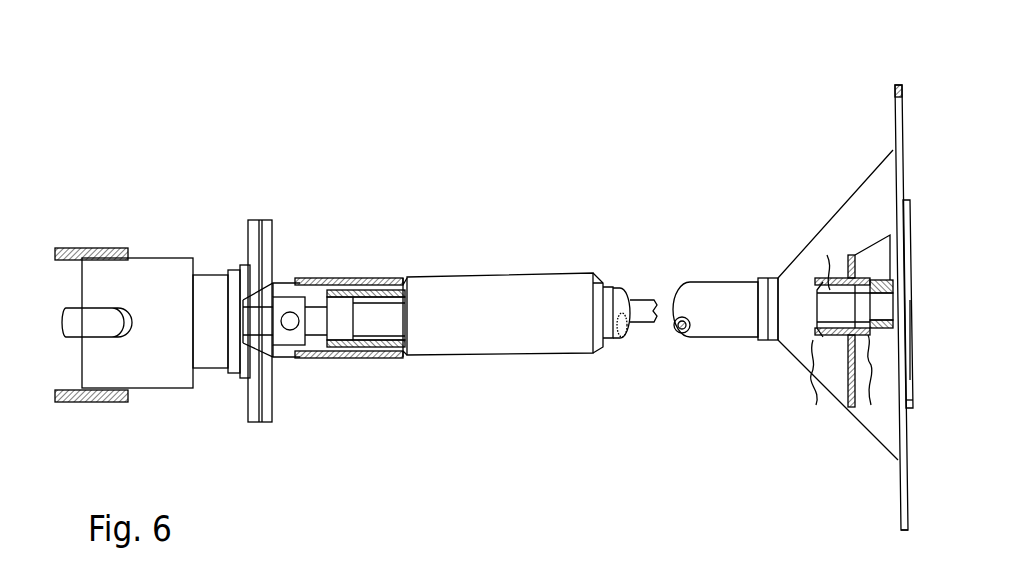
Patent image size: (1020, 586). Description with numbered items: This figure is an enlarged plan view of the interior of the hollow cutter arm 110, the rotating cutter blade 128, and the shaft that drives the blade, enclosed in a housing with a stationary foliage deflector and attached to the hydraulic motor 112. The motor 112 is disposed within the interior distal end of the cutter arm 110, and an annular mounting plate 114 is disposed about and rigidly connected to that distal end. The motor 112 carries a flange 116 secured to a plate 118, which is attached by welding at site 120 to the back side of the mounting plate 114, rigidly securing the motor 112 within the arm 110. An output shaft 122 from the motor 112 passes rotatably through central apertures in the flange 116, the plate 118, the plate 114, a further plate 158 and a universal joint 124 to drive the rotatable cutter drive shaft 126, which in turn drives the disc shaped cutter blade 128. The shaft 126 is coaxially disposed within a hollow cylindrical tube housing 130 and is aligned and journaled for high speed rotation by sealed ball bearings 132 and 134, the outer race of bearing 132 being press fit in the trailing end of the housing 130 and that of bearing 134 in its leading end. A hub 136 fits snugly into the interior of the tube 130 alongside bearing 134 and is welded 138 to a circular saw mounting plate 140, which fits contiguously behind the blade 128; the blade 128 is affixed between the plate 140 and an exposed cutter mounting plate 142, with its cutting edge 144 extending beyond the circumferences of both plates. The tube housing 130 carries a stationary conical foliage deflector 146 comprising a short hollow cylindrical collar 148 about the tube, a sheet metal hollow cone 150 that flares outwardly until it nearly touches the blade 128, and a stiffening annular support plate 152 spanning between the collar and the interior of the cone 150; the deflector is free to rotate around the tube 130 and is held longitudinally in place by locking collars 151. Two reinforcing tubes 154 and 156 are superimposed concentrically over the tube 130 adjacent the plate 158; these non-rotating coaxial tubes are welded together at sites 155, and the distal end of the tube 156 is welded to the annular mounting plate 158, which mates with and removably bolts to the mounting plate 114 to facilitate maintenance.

The cutter arm 110 is at (112, 402).
The hydraulic motor 112 is at (175, 258).
The annular mounting plate 114 is at (255, 220).
The flange 116 is at (222, 368).
The plate 118 is at (243, 374).
The welding site 120 is at (250, 378).
The output shaft 122 is at (280, 362).
The universal joint 124 is at (300, 305).
The cutter drive shaft 126 is at (322, 280).
The cutter blade 128 is at (898, 85).
The tube housing 130 is at (412, 278).
The ball bearing 132 is at (345, 300).
The ball bearing 134 is at (882, 300).
The hub 136 is at (860, 425).
The weld 138 is at (912, 407).
The circular saw mounting plate 140 is at (906, 215).
The exposed cutter mounting plate 142 is at (911, 345).
The cutting edge 144 is at (907, 531).
The conical foliage deflector 146 is at (762, 193).
The cylindrical collar 148 is at (812, 250).
The hollow cone 150 is at (862, 182).
The collar 151 is at (765, 342).
The annular support plate 152 is at (840, 270).
The reinforcing tube 154 is at (393, 280).
The weld sites 155 is at (597, 282).
The reinforcing tube 156 is at (382, 278).
The annular mounting plate 158 is at (265, 220).